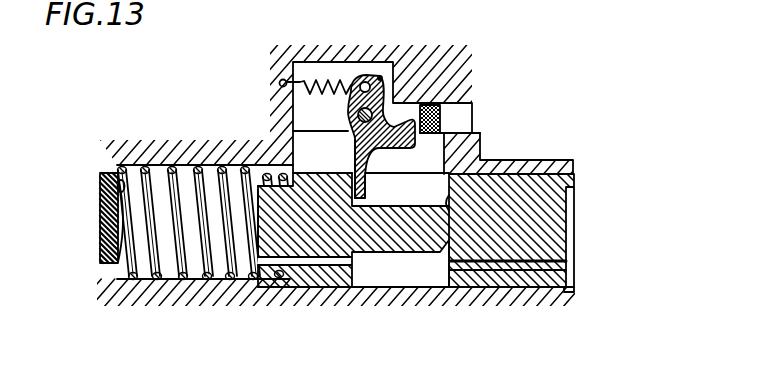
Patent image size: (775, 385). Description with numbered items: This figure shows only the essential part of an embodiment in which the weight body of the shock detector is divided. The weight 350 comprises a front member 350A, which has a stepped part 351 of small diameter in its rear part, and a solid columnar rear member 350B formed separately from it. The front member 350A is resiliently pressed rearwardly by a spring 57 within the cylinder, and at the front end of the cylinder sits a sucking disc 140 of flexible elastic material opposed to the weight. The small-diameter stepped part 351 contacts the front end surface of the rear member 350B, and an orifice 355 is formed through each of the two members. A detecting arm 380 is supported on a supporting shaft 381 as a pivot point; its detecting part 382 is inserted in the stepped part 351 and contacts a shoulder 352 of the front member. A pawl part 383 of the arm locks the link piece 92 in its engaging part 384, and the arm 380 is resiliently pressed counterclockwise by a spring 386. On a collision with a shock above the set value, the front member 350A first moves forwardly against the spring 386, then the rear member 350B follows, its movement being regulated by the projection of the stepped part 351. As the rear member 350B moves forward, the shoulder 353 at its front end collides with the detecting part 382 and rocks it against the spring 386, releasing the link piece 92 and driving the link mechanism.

The sucking disc 140 is at (105, 226).
The spring 57 is at (157, 280).
The front member 350A is at (258, 215).
The weight 350 is at (313, 223).
The orifice 355 is at (337, 263).
The stepped part 351 is at (418, 240).
The shoulder 353 is at (450, 212).
The rear member 350B is at (555, 230).
The detecting part 382 is at (366, 190).
The detecting arm 380 is at (381, 76).
The supporting shaft 381 is at (350, 115).
The spring 386 is at (328, 87).
The shoulder 352 is at (352, 150).
The link piece 92 is at (434, 112).
The engaging part 384 is at (440, 128).
The pawl part 383 is at (447, 147).